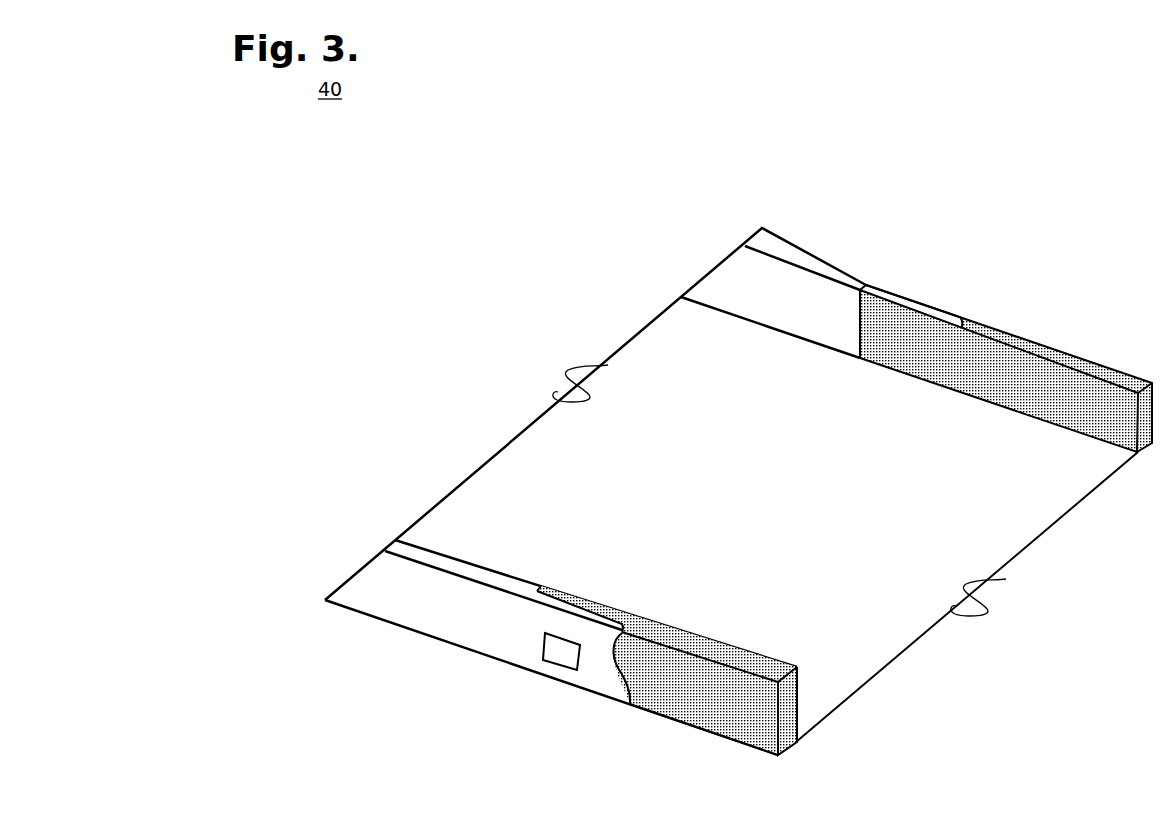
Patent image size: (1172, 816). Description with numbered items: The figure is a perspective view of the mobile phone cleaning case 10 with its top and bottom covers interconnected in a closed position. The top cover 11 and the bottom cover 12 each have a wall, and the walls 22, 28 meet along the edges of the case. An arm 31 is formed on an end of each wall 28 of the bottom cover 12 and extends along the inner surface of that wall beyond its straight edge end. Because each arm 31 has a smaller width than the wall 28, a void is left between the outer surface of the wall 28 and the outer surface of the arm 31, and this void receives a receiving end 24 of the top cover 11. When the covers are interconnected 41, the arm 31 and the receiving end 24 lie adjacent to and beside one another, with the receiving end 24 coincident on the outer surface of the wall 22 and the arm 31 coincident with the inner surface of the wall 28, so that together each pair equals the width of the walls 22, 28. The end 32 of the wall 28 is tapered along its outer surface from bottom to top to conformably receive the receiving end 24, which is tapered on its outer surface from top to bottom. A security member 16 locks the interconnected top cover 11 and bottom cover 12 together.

The mobile phone cleaning case 10 is at (857, 212).
The top cover 11 is at (802, 250).
The bottom cover 12 is at (1066, 351).
The security member 16 is at (563, 668).
The wall 22 is at (392, 628).
The receiving end 24 is at (535, 606).
The wall 28 is at (672, 720).
The arm 31 is at (612, 612).
The end 32 is at (628, 688).
The interconnection 41 is at (974, 303).